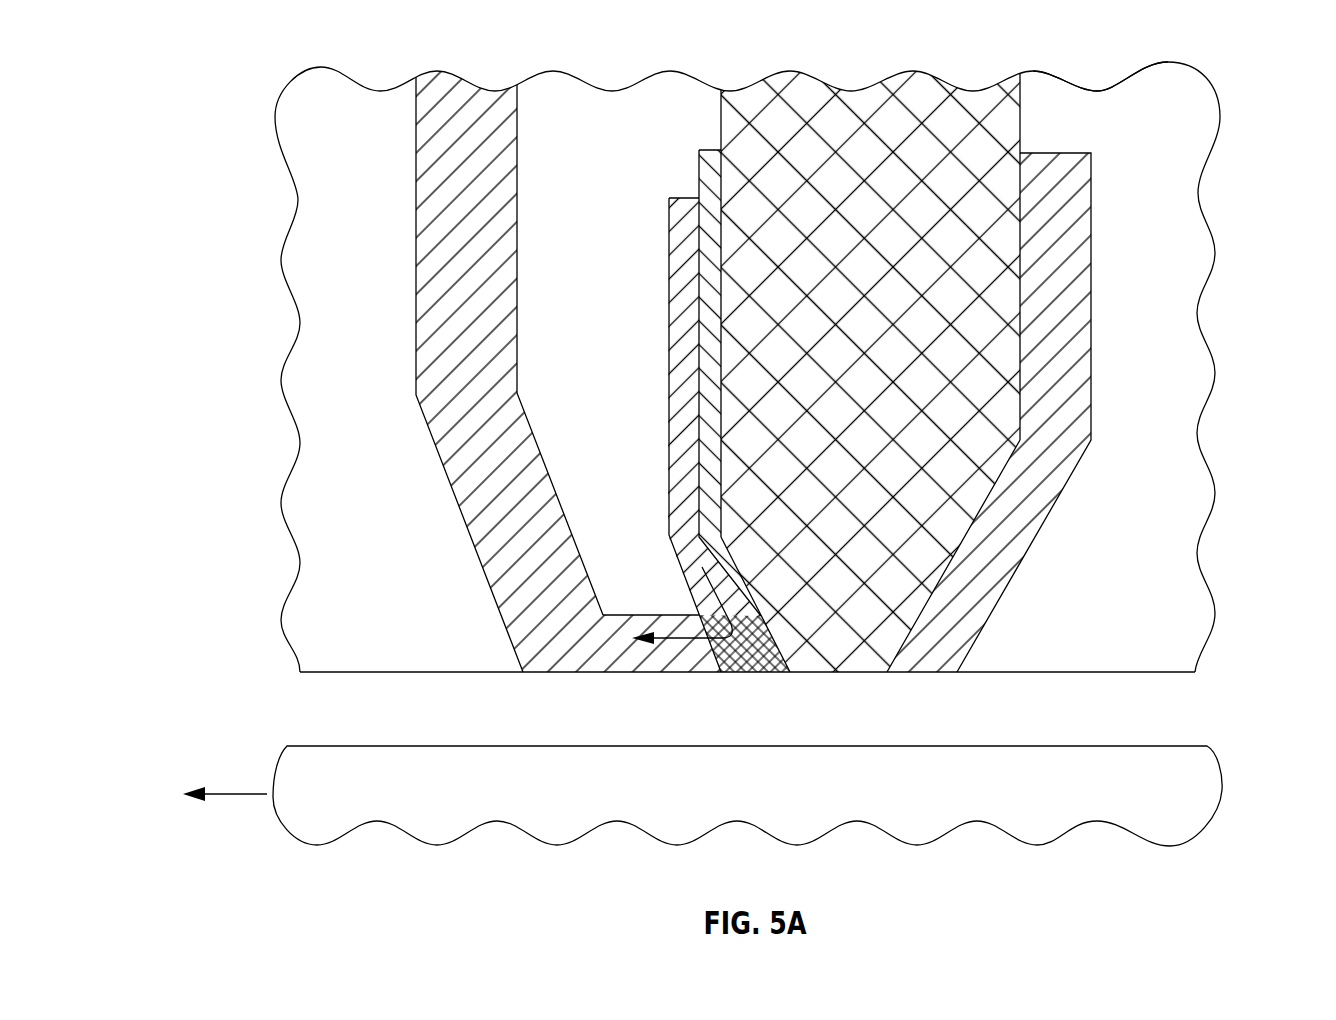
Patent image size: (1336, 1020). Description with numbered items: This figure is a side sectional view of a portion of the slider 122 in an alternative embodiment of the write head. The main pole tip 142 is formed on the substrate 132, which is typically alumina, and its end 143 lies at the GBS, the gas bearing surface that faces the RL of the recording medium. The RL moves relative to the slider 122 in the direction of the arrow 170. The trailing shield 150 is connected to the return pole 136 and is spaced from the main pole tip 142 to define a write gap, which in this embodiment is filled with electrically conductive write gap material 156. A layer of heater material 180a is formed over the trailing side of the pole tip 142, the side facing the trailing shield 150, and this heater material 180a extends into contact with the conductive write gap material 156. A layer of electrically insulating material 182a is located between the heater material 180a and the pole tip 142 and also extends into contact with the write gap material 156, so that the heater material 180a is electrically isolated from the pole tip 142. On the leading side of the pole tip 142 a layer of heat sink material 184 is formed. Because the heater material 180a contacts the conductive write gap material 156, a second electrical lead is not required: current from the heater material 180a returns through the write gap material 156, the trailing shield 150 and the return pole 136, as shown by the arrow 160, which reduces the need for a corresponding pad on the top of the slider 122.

The slider 122 is at (1205, 213).
The substrate 132 is at (1063, 88).
The return pole 136 is at (460, 92).
The main pole tip 142 is at (900, 82).
The end 143 is at (840, 673).
The trailing shield 150 is at (652, 658).
The electrically conductive write gap material 156 is at (746, 669).
The arrow 160 is at (677, 636).
The arrow 170 is at (223, 792).
The heater material 180a is at (680, 240).
The insulating material 182a is at (710, 400).
The heat sink material 184 is at (1080, 237).
The gas bearing surface GBS is at (1177, 673).
The recording layer RL is at (747, 796).